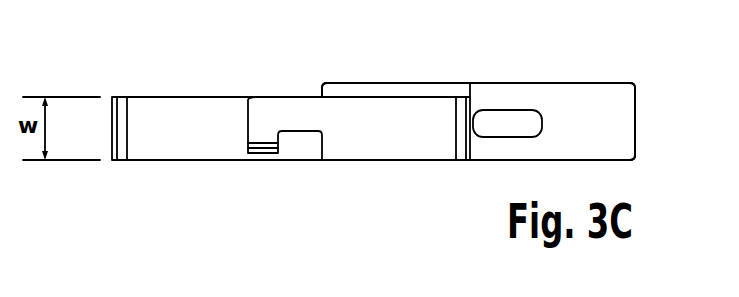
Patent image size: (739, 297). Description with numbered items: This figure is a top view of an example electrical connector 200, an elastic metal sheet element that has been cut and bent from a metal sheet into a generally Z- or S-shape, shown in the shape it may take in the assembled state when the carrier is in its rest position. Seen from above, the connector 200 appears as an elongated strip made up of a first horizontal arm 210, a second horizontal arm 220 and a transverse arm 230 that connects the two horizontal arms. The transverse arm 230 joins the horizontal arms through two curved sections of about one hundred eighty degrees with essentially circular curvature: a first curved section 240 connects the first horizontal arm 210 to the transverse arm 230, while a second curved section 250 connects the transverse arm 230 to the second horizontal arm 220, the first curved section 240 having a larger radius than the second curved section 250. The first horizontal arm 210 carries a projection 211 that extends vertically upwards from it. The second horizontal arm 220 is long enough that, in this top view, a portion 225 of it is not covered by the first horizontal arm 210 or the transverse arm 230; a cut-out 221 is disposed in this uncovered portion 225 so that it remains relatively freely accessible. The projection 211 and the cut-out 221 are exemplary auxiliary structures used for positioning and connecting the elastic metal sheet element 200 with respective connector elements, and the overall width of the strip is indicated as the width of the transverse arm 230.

The electrical connector 200 is at (146, 90).
The first horizontal arm 210 is at (312, 112).
The projection 211 is at (262, 153).
The second horizontal arm 220 is at (537, 99).
The cut-out 221 is at (502, 120).
The uncovered portion 225 is at (599, 102).
The transverse arm 230 is at (180, 138).
The first curved section 240 is at (460, 101).
The second curved section 250 is at (118, 156).